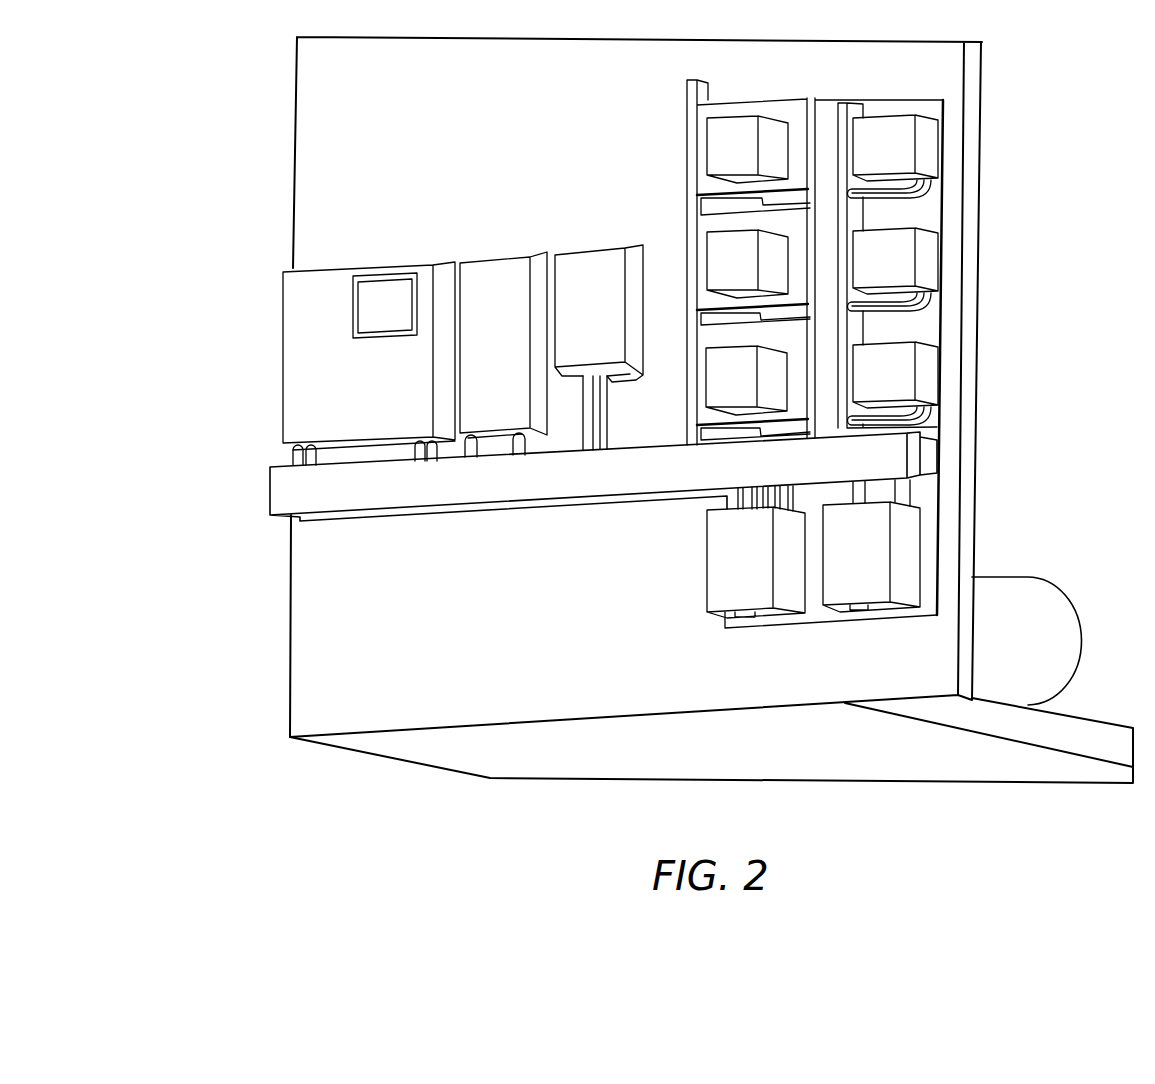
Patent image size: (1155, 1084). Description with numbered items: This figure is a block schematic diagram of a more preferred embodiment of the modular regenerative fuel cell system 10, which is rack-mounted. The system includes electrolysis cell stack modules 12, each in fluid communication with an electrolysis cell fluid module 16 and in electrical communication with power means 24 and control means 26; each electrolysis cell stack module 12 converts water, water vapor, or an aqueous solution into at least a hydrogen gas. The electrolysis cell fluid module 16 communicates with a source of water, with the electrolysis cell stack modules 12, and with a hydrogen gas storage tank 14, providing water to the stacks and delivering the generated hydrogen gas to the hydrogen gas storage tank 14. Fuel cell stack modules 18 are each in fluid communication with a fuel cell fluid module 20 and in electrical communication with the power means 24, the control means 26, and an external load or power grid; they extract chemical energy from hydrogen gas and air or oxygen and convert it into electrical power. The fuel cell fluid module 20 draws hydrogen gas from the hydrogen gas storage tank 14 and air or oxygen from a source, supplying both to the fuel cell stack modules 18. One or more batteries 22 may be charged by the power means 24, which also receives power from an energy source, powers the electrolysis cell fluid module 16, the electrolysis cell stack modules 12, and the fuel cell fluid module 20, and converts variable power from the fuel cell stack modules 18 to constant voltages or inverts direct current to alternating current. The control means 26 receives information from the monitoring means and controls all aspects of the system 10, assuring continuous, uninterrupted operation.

The modular regenerative fuel cell system 10 is at (272, 177).
The electrolysis cell stack modules 12 is at (900, 165).
The hydrogen gas storage tank 14 is at (1034, 657).
The electrolysis cell fluid module 16 is at (874, 571).
The fuel cell stack modules 18 is at (750, 165).
The fuel cell fluid module 20 is at (756, 576).
The batteries 22 is at (606, 333).
The power means 24 is at (511, 353).
The control means 26 is at (361, 403).